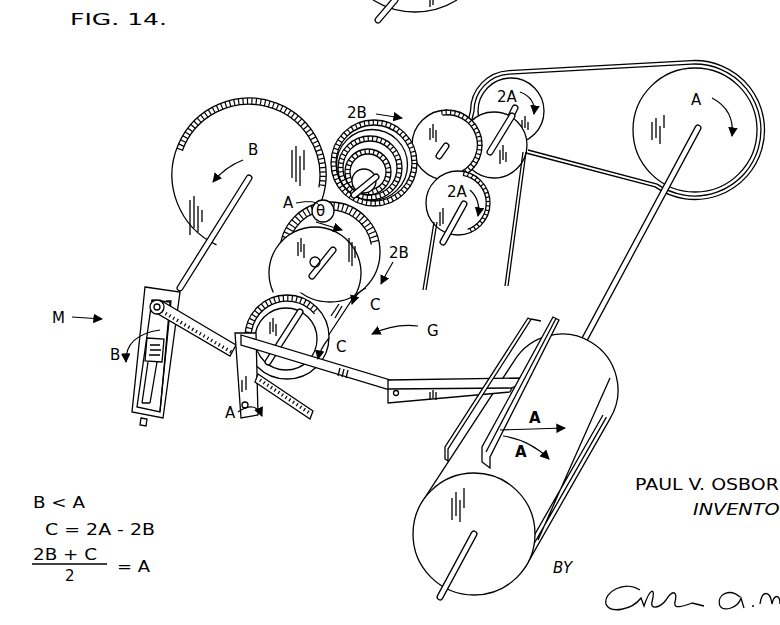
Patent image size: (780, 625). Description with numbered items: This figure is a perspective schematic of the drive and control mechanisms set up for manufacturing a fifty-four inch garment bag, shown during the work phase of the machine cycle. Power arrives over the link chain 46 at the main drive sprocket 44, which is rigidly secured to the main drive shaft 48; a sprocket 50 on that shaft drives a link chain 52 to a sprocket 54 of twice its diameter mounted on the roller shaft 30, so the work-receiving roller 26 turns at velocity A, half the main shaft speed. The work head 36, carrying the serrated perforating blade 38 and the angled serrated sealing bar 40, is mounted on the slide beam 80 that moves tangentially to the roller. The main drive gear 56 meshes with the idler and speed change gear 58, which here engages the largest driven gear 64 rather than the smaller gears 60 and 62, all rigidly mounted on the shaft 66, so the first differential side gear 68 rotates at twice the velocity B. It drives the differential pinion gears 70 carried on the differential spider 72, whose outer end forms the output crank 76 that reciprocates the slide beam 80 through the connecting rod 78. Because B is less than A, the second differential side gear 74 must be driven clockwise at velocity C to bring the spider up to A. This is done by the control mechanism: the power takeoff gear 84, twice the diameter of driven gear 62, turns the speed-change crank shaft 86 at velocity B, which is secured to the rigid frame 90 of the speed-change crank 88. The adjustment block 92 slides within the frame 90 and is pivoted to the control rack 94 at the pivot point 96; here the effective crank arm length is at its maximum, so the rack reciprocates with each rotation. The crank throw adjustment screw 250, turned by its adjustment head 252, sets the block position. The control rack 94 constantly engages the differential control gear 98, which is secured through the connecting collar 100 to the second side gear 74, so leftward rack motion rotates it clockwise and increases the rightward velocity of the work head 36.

The work-receiving roller 26 is at (614, 406).
The roller shaft 30 is at (646, 231).
The work head 36 is at (540, 316).
The serrated perforating blade 38 is at (557, 321).
The serrated sealing bar 40 is at (526, 326).
The main drive sprocket 44 is at (518, 179).
The link chain 46 is at (520, 203).
The main drive shaft 48 is at (445, 244).
The sprocket 50 is at (522, 86).
The link chain 52 is at (635, 66).
The sprocket 54 is at (722, 178).
The main drive gear 56 is at (472, 233).
The idler and speed change gear 58 is at (450, 111).
The driven gear 60 is at (386, 158).
The driven gear 62 is at (341, 148).
The driven gear 64 is at (344, 126).
The shaft 66 is at (353, 180).
The first differential side gear 68 is at (305, 219).
The differential pinion gears 70 is at (323, 200).
The differential spider 72 is at (312, 264).
The second differential side gear 74 is at (290, 253).
The output crank 76 is at (236, 379).
The connecting rod 78 is at (360, 378).
The slide beam 80 is at (462, 379).
The power takeoff gear 84 is at (255, 102).
The speed-change crank shaft 86 is at (206, 268).
The speed-change crank 88 is at (158, 285).
The rigid frame 90 is at (168, 395).
The adjustment block 92 is at (150, 323).
The control rack 94 is at (307, 421).
The pivot point 96 is at (150, 305).
The differential control gear 98 is at (260, 319).
The connecting collar 100 is at (278, 306).
The crank throw adjustment screw 250 is at (142, 398).
The adjustment head 252 is at (143, 428).